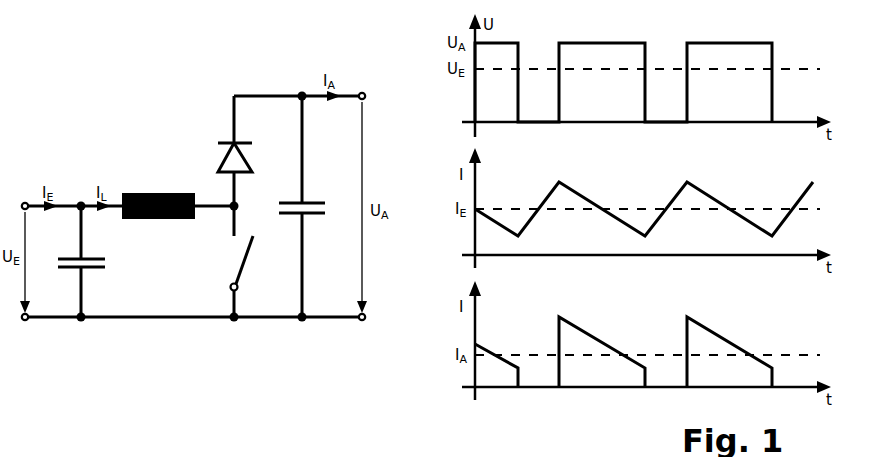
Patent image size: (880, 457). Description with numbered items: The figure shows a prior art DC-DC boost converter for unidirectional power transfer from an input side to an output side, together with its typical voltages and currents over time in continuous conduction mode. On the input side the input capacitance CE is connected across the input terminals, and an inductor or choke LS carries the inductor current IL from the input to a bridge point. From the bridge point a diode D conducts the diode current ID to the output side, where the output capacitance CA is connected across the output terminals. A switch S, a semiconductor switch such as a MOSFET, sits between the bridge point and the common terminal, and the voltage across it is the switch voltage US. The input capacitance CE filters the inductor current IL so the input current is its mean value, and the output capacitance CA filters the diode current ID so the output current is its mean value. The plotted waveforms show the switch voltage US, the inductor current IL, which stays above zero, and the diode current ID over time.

The inductor LS is at (158, 196).
The input capacitance CE is at (78, 261).
The output capacitance CA is at (302, 206).
The diode D is at (229, 151).
The switch S is at (221, 228).
The switch voltage US is at (623, 70).
The inductor current IL is at (644, 195).
The diode current ID is at (623, 337).